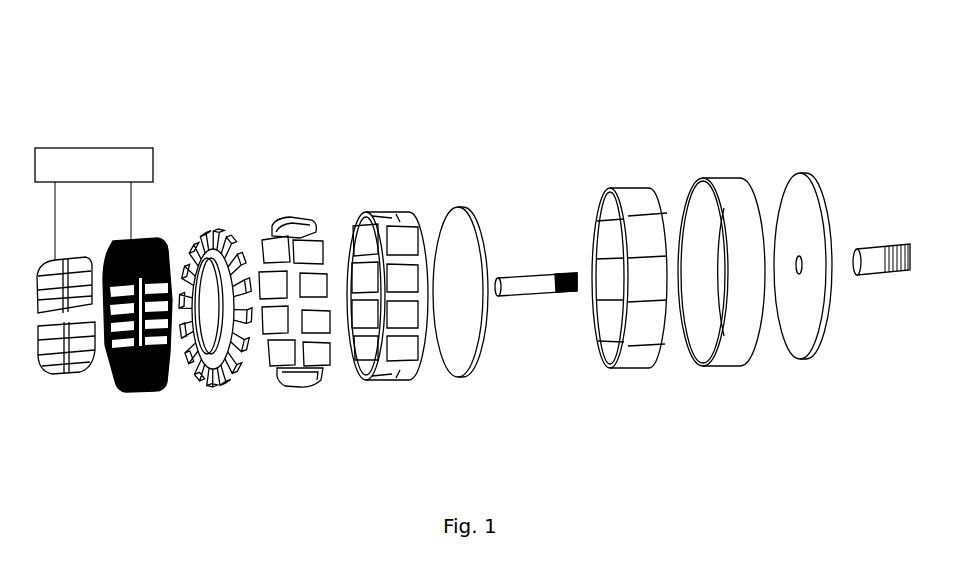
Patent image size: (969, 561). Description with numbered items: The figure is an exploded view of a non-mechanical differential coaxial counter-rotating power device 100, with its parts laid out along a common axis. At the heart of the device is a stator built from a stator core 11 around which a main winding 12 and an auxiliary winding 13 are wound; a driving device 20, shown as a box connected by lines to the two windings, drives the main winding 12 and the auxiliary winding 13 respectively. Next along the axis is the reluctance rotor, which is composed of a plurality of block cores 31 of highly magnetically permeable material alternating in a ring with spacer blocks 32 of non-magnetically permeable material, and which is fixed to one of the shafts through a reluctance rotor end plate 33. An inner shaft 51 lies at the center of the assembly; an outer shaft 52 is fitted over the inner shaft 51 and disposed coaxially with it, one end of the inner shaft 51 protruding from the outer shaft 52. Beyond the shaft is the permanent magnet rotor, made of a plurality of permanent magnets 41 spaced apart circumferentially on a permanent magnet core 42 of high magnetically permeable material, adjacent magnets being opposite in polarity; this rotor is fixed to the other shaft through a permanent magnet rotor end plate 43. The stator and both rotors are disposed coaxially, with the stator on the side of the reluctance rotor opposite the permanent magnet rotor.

The non-mechanical differential coaxial counter-rotating power device 100 is at (398, 72).
The driving device 20 is at (136, 160).
The stator core 11 is at (204, 388).
The main winding 12 is at (126, 393).
The auxiliary winding 13 is at (52, 380).
The block cores 31 is at (291, 222).
The spacer blocks 32 is at (378, 215).
The reluctance rotor end plate 33 is at (455, 218).
The permanent magnets 41 is at (612, 196).
The permanent magnet core 42 is at (720, 190).
The permanent magnet rotor end plate 43 is at (793, 192).
The inner shaft 51 is at (517, 287).
The outer shaft 52 is at (878, 262).